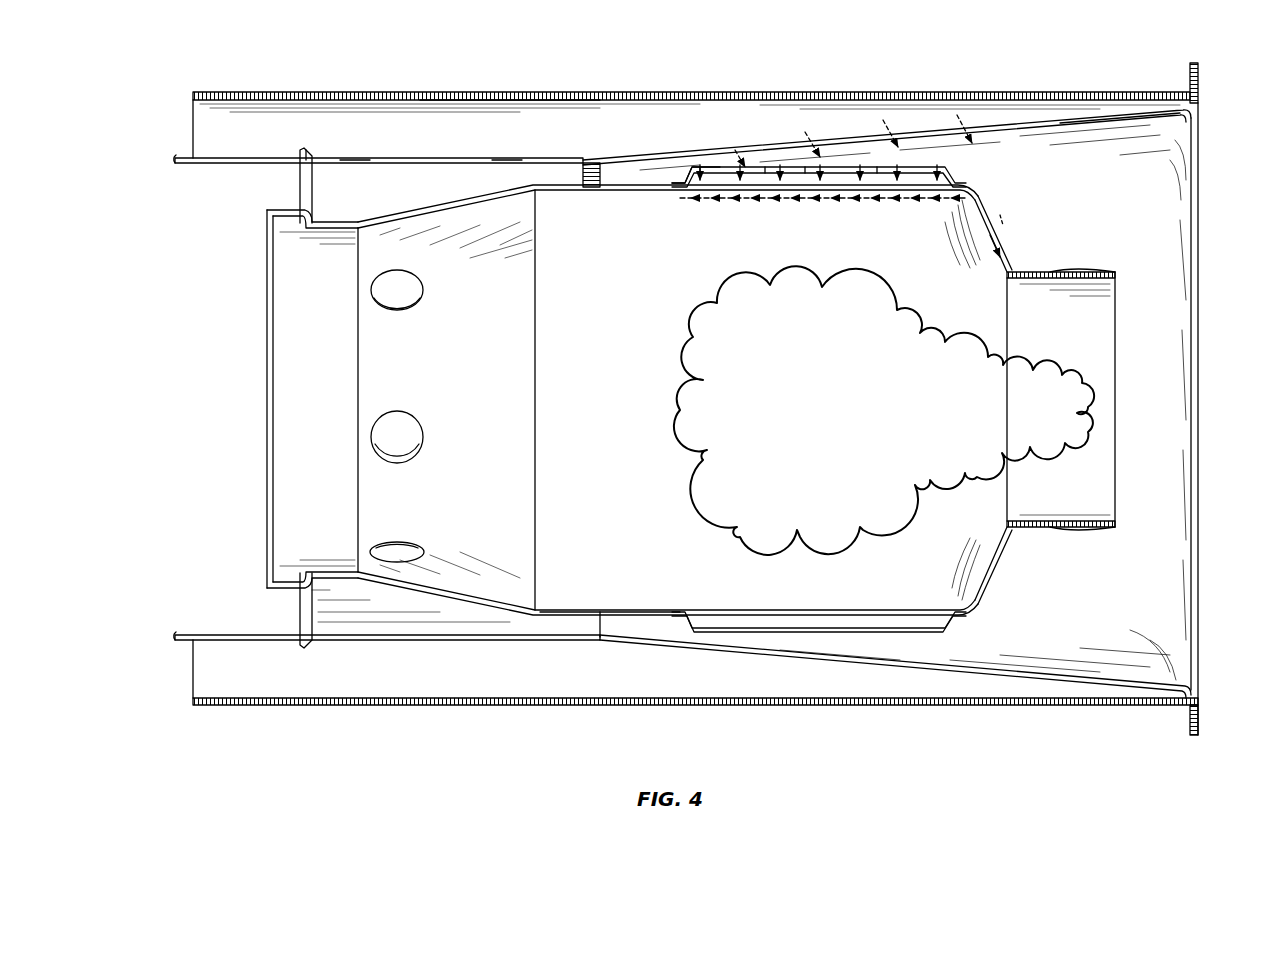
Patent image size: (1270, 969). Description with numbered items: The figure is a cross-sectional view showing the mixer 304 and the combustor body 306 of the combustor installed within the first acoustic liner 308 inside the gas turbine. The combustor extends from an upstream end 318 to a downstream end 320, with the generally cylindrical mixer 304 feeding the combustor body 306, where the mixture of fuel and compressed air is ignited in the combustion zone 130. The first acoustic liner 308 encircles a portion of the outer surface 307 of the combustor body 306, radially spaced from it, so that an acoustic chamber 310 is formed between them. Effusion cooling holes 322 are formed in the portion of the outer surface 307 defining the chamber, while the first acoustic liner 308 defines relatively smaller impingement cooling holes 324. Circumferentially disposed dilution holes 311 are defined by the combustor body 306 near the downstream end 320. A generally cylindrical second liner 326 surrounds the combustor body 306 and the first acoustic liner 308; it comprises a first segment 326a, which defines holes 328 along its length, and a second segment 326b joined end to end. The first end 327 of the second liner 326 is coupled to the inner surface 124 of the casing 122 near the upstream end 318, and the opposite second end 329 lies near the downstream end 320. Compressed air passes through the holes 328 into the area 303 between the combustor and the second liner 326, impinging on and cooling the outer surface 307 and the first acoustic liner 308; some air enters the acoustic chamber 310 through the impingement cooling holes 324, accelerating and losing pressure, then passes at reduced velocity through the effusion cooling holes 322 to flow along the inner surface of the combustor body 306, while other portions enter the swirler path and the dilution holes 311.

The casing 122 is at (582, 92).
The inner surface 124 is at (518, 102).
The combustion zone 130 is at (840, 419).
The area 303 is at (646, 176).
The mixer 304 is at (1073, 535).
The combustor body 306 is at (575, 620).
The outer surface 307 is at (672, 183).
The first acoustic liner 308 is at (805, 166).
The acoustic chamber 310 is at (877, 166).
The dilution holes 311 is at (397, 464).
The upstream end 318 is at (1007, 680).
The downstream end 320 is at (428, 607).
The effusion cooling holes 322 is at (887, 198).
The impingement cooling holes 324 is at (765, 165).
The second liner 326 is at (1020, 123).
The first segment 326a is at (1097, 115).
The second segment 326b is at (207, 158).
The first end 327 is at (1172, 134).
The holes 328 is at (507, 178).
The second end 329 is at (228, 185).